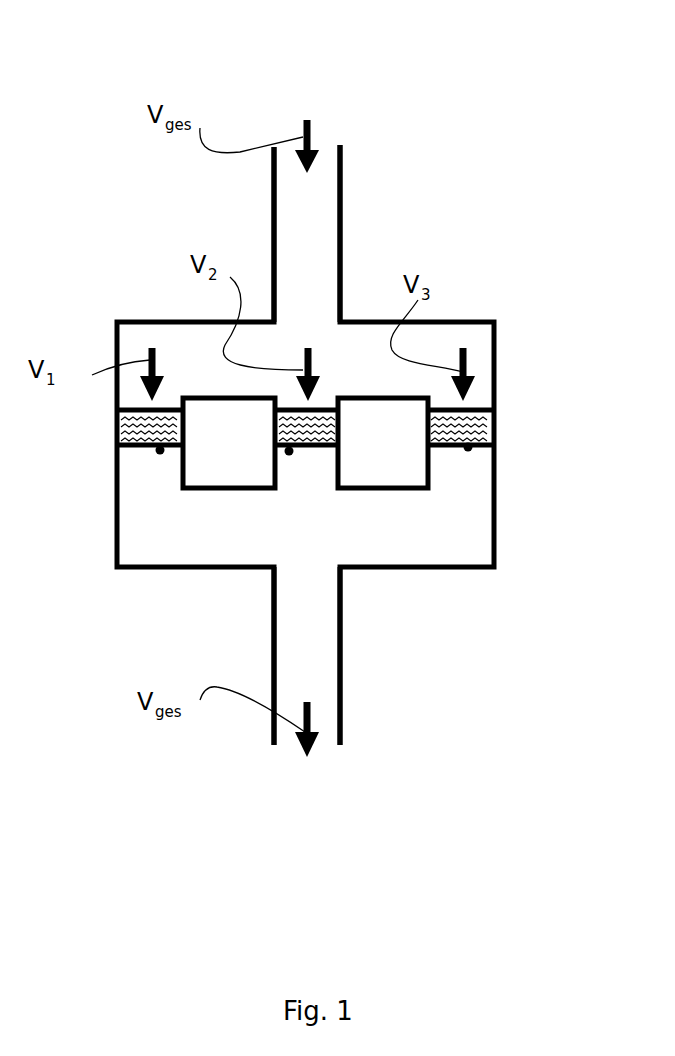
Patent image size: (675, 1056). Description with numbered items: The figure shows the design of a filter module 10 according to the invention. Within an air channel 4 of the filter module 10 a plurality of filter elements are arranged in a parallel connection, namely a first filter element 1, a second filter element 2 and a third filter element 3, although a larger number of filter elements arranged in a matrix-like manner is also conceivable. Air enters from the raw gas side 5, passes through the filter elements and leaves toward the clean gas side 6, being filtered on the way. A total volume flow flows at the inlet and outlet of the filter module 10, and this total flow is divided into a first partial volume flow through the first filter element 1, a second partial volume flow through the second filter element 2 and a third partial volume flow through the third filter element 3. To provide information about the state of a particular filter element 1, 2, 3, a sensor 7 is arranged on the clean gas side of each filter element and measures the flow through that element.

The first filter element 1 is at (130, 425).
The second filter element 2 is at (311, 445).
The third filter element 3 is at (498, 416).
The air channel 4 is at (468, 541).
The raw gas side 5 is at (322, 308).
The clean gas side 6 is at (307, 627).
The sensor 7 is at (160, 452).
The filter module 10 is at (549, 134).